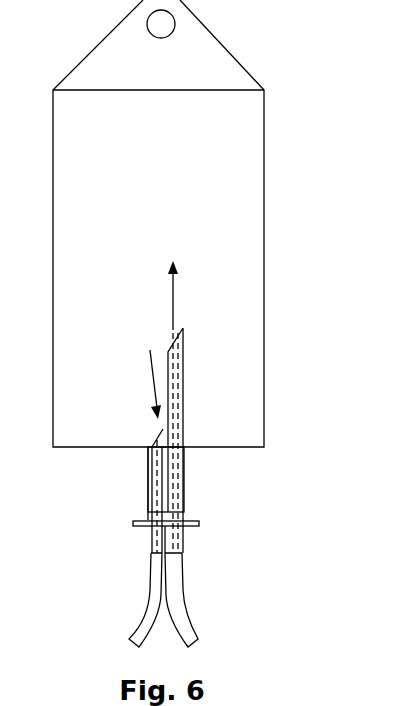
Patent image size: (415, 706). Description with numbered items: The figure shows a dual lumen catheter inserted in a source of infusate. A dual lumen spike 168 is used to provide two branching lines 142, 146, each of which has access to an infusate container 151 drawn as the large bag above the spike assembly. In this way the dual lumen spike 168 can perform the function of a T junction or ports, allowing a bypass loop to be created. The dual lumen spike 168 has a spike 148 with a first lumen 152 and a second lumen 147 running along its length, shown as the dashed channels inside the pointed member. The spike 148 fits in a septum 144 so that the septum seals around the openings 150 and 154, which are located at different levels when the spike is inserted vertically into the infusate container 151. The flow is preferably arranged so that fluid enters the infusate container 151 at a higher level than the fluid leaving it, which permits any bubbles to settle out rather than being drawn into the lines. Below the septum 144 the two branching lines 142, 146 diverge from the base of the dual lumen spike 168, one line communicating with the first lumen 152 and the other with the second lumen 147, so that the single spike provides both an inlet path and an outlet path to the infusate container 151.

The infusate container 151 is at (143, 225).
The opening 154 is at (172, 343).
The spike 148 is at (183, 350).
The second lumen 147 is at (178, 390).
The opening 150 is at (160, 428).
The first lumen 152 is at (152, 460).
The septum 144 is at (148, 495).
The branching line 142 is at (155, 583).
The branching line 146 is at (183, 577).
The dual lumen spike 168 is at (237, 497).